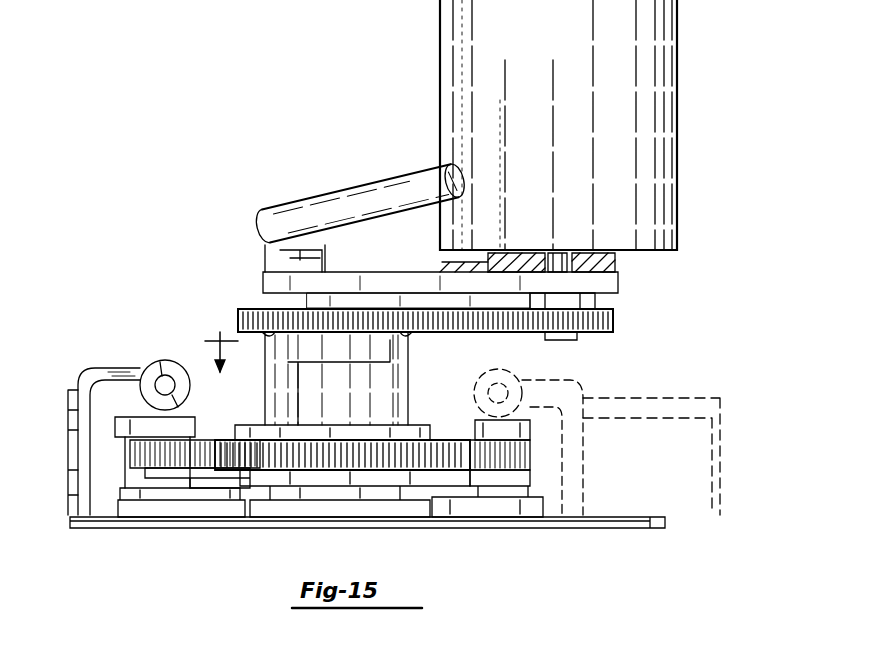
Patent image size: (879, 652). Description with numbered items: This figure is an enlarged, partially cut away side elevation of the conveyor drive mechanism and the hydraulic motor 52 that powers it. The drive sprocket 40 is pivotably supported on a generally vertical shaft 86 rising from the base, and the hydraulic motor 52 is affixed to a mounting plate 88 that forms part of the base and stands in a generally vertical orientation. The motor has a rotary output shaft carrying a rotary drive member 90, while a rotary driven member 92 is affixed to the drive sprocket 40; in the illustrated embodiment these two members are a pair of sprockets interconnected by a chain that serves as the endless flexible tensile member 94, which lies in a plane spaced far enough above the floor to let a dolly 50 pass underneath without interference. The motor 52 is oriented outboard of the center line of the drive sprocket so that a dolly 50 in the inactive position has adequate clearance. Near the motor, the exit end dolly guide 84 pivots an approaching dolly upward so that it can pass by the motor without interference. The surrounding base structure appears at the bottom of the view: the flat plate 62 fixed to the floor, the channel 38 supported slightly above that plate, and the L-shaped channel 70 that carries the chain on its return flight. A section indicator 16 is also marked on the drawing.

The hydraulic motor 52 is at (678, 37).
The exit end dolly guide 84 is at (319, 196).
The mounting plate 88 is at (618, 266).
The rotary drive member 90 is at (596, 302).
The rotary driven member 92 is at (254, 308).
The endless flexible tensile member 94 is at (399, 307).
The section line 16 is at (210, 342).
The dolly 50 is at (62, 390).
The channel 38 is at (118, 517).
The flat plate 62 is at (205, 527).
The vertical shaft 86 is at (300, 520).
The drive sprocket 40 is at (432, 470).
The L-shaped channel 70 is at (535, 500).